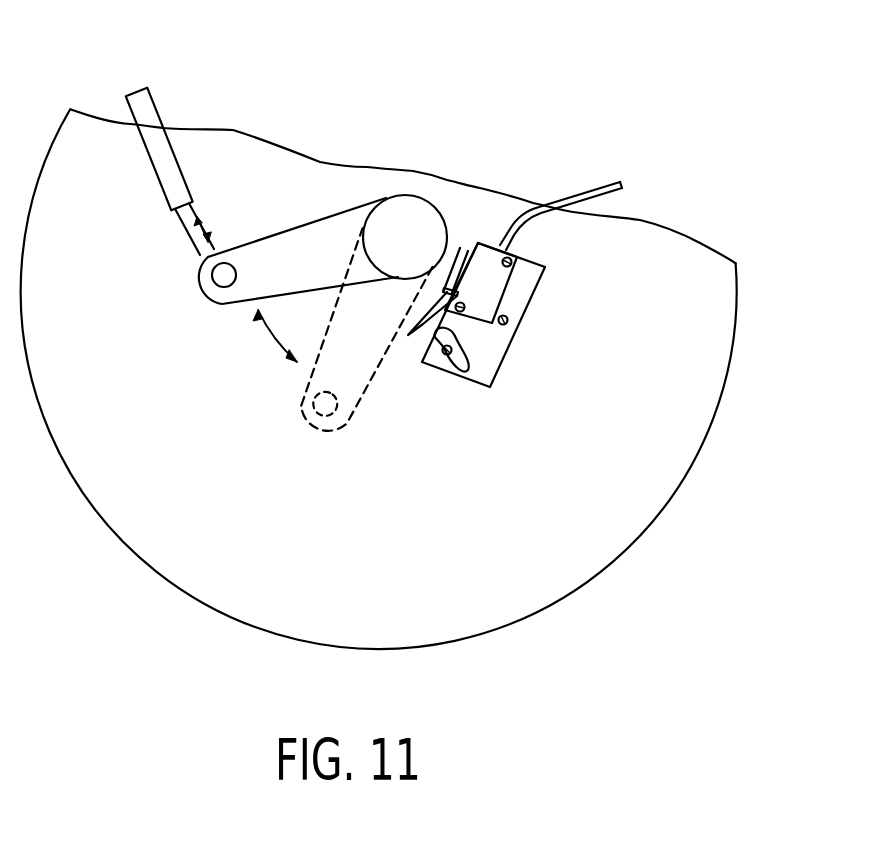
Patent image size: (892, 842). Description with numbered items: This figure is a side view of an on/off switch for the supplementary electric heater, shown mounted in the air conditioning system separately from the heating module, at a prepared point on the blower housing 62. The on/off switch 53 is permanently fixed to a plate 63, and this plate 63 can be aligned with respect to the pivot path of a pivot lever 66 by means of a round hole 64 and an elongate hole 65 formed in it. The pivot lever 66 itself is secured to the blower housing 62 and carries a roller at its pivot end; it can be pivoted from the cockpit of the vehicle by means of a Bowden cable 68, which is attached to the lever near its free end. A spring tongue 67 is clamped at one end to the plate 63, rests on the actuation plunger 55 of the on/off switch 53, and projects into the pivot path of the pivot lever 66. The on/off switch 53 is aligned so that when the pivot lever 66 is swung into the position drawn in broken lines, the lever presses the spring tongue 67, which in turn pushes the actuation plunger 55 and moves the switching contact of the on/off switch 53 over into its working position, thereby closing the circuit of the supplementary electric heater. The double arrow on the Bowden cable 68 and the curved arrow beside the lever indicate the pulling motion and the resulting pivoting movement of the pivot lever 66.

The on/off switch 53 is at (490, 287).
The actuation plunger 55 is at (461, 285).
The blower housing 62 is at (702, 370).
The plate 63 is at (483, 345).
The round hole 64 is at (508, 321).
The elongate hole 65 is at (462, 367).
The pivot lever 66 is at (317, 240).
The spring tongue 67 is at (423, 324).
The Bowden cable 68 is at (167, 157).